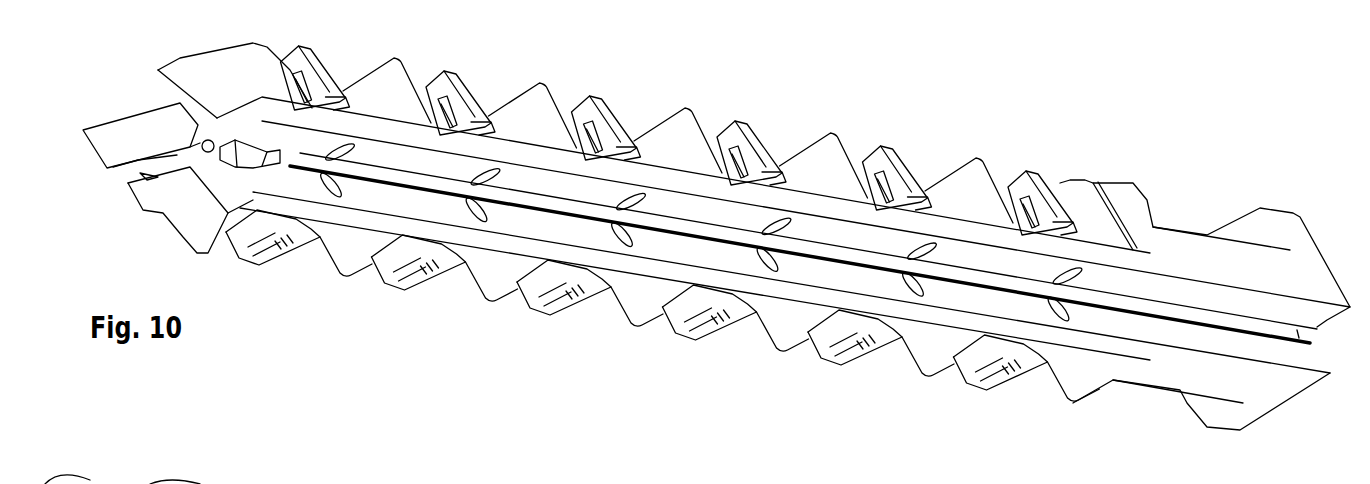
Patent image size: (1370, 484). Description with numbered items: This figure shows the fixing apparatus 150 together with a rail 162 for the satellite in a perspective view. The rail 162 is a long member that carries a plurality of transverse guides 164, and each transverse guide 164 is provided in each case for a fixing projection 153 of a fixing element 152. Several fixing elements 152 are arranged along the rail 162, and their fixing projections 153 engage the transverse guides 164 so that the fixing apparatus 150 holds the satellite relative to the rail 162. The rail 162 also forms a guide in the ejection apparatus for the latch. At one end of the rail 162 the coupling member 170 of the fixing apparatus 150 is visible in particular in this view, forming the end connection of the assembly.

The fixing apparatus 150 is at (783, 238).
The fixing element 152 is at (545, 286).
The fixing projection 153 is at (618, 237).
The rail 162 is at (785, 263).
The transverse guide 164 is at (627, 243).
The coupling member 170 is at (146, 124).